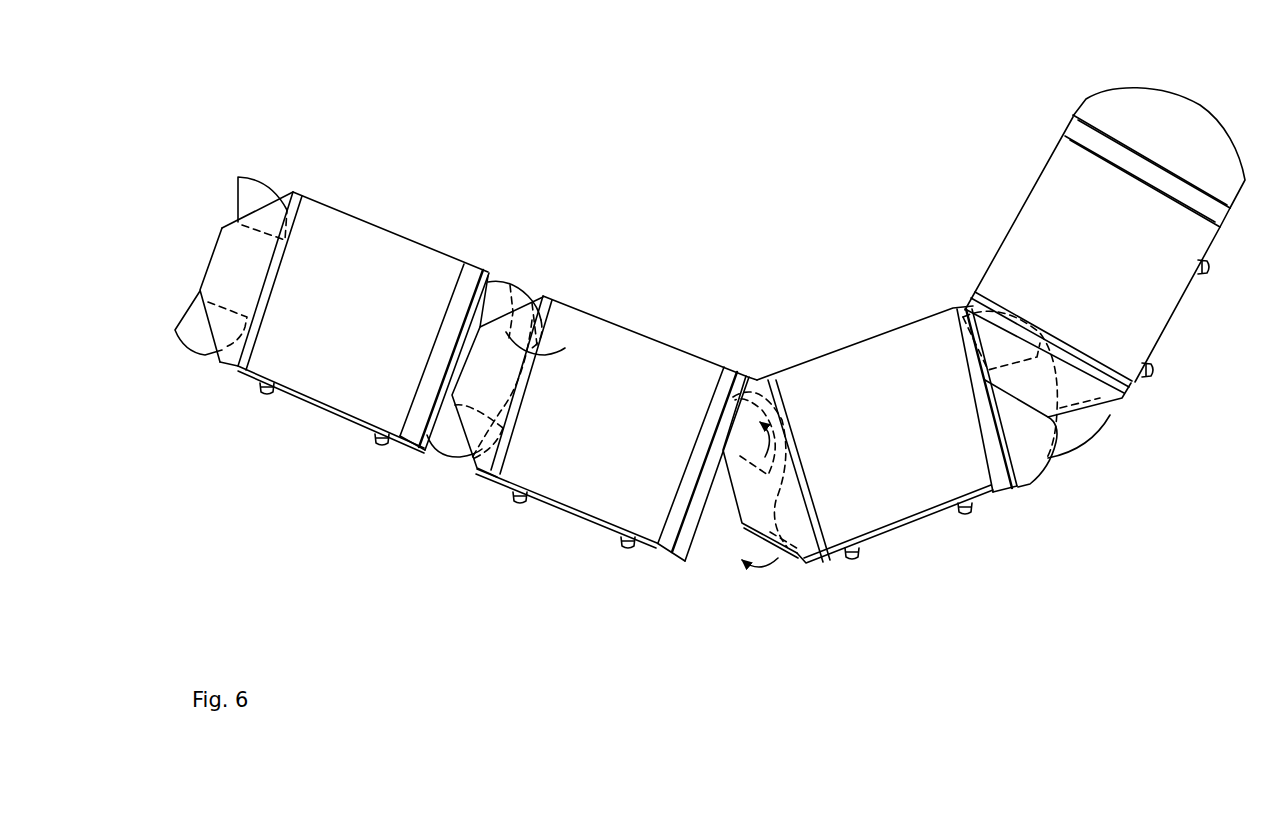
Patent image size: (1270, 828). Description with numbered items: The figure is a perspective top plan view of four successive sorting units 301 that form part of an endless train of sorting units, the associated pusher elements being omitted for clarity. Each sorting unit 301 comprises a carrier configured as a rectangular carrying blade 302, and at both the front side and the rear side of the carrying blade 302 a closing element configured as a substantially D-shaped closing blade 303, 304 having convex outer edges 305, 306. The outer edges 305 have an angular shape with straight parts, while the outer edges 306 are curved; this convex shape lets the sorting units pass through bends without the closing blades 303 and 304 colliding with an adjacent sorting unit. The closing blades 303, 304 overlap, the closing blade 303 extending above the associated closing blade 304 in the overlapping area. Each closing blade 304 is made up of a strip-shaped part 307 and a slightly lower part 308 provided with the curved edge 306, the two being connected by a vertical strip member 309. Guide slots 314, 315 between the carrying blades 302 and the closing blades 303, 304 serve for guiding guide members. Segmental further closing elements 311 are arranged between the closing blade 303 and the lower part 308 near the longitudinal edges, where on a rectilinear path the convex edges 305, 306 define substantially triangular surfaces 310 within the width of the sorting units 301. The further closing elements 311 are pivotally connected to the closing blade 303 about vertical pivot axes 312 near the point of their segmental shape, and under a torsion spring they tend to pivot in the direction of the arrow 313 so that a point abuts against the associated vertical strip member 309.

The sorting unit 301 is at (421, 155).
The carrying blade 302 is at (334, 312).
The closing blade 303 is at (222, 275).
The closing blade 304 is at (1213, 148).
The outer edge 305 is at (219, 233).
The outer edge 306 is at (1160, 85).
The strip-shaped part 307 is at (656, 553).
The lower part 308 is at (702, 548).
The vertical strip member 309 is at (1030, 490).
The triangular surface 310 is at (527, 282).
The further closing element 311 is at (252, 184).
The vertical pivot axis 312 is at (517, 357).
The arrow 313 is at (765, 457).
The guide slot 314 is at (312, 201).
The guide slot 315 is at (458, 285).